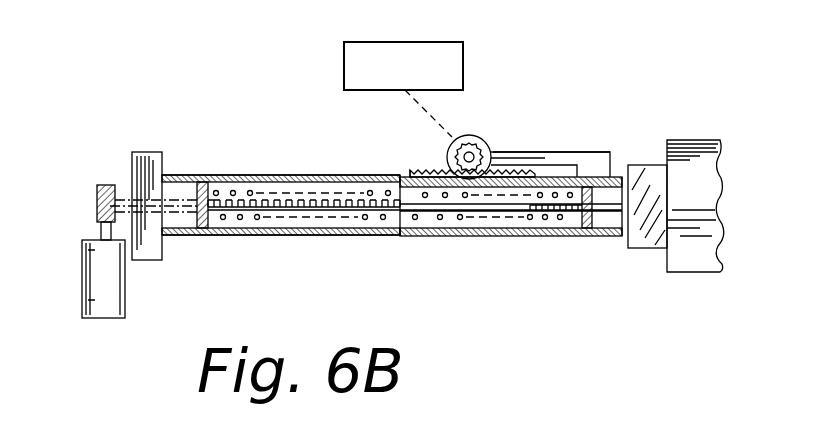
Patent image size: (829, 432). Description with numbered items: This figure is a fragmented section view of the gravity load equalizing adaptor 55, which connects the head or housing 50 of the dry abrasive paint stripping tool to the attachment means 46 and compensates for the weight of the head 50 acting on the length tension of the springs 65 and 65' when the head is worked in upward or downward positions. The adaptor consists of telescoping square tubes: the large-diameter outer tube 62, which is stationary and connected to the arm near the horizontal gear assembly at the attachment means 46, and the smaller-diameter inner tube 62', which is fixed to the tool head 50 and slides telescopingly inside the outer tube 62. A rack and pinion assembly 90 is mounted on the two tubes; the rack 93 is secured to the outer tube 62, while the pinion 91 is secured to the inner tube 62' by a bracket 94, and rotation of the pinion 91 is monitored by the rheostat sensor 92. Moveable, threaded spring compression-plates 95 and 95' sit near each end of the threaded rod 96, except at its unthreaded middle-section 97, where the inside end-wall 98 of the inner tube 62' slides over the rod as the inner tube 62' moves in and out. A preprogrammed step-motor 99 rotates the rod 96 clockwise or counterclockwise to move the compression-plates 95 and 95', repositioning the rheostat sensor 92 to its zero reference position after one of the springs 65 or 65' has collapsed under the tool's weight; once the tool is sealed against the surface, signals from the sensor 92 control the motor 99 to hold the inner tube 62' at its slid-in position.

The attachment means 46 is at (152, 152).
The head or housing 50 is at (693, 141).
The gravity load equalizing adaptor 55 is at (283, 170).
The outer tube 62 is at (281, 174).
The inner tube 62' is at (511, 239).
The spring 65 is at (302, 164).
The spring 65' is at (493, 245).
The rack and pinion assembly 90 is at (538, 147).
The pinion 91 is at (469, 145).
The rheostat sensor 92 is at (345, 44).
The rack 93 is at (420, 170).
The bracket 94 is at (602, 154).
The spring compression-plate 95 is at (199, 239).
The spring compression-plate 95' is at (620, 249).
The rod 96 is at (272, 210).
The middle-section 97 is at (387, 211).
The inside end-wall 98 is at (396, 177).
The step-motor 99 is at (124, 313).